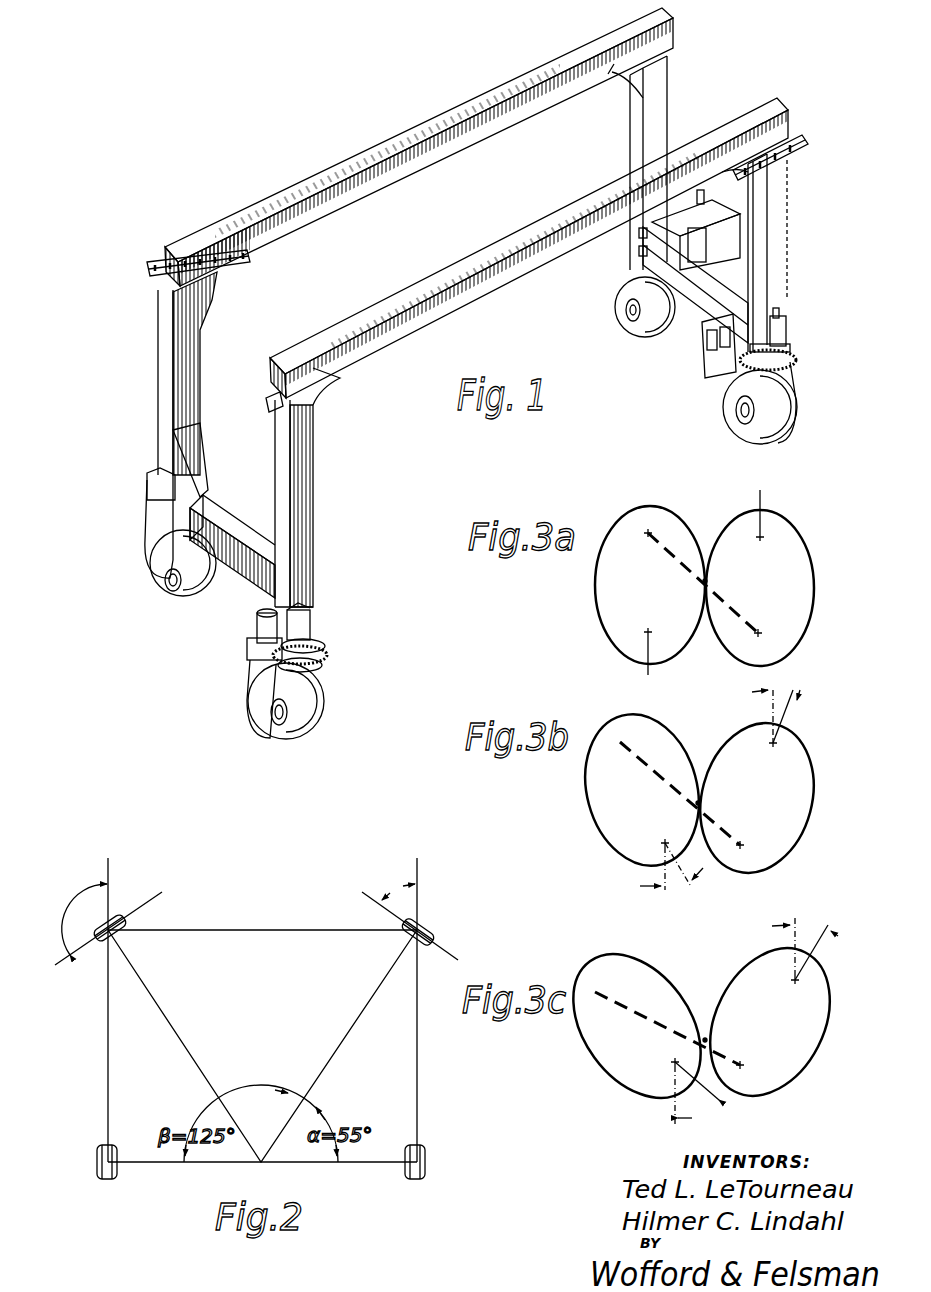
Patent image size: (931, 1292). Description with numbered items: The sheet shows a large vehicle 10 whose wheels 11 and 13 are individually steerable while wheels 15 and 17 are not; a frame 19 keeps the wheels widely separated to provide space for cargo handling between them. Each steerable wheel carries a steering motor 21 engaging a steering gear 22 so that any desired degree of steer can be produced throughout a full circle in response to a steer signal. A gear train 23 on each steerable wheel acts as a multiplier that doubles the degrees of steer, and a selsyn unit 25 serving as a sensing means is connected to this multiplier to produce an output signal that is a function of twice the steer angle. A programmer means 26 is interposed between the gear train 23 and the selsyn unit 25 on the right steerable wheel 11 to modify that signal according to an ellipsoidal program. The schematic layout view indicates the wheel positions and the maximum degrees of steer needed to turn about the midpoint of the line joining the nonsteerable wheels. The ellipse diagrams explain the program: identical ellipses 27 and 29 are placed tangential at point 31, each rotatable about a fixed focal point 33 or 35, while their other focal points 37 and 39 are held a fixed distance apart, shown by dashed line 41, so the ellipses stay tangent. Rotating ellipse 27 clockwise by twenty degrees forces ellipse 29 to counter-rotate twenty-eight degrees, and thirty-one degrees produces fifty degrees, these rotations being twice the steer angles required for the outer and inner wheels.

In FIG. 1, the vehicle 10 is at (306, 150).
In FIG. 1, the frame 19 is at (672, 26).
In FIG. 1, the wheel 17 is at (618, 292).
In FIG. 2, the wheel 17 is at (103, 1181).
In FIG. 1, the selsyn unit 25 is at (780, 325).
In FIG. 1, the wheel 13 is at (728, 411).
In FIG. 2, the wheel 13 is at (113, 915).
In FIG. 1, the wheel 15 is at (165, 597).
In FIG. 2, the wheel 15 is at (417, 1181).
In FIG. 1, the steering motor 21 is at (257, 624).
In FIG. 1, the programmer means 26 is at (322, 636).
In FIG. 1, the steering gear 22 is at (326, 653).
In FIG. 1, the gear train 23 is at (320, 671).
In FIG. 1, the wheel 11 is at (325, 713).
In FIG. 2, the wheel 11 is at (432, 922).
In FIG. 3A, the ellipse 29 is at (597, 633).
In FIG. 3B, the ellipse 29 is at (587, 786).
In FIG. 3C, the ellipse 29 is at (580, 1051).
In FIG. 3A, the ellipse 27 is at (815, 583).
In FIG. 3B, the ellipse 27 is at (812, 802).
In FIG. 3C, the ellipse 27 is at (817, 1051).
In FIG. 3A, the dashed line 41 is at (675, 558).
In FIG. 3B, the dashed line 41 is at (676, 790).
In FIG. 3C, the dashed line 41 is at (665, 1025).
In FIG. 3A, the tangent point 31 is at (704, 587).
In FIG. 3B, the tangent point 31 is at (699, 800).
In FIG. 3C, the tangent point 31 is at (706, 1036).
In FIG. 3A, the focal point 37 is at (648, 533).
In FIG. 3A, the focal point 33 is at (762, 537).
In FIG. 3B, the focal point 33 is at (771, 740).
In FIG. 3C, the focal point 33 is at (795, 978).
In FIG. 3A, the focal point 35 is at (648, 634).
In FIG. 3B, the focal point 35 is at (664, 846).
In FIG. 3C, the focal point 35 is at (675, 1066).
In FIG. 3A, the focal point 39 is at (772, 645).